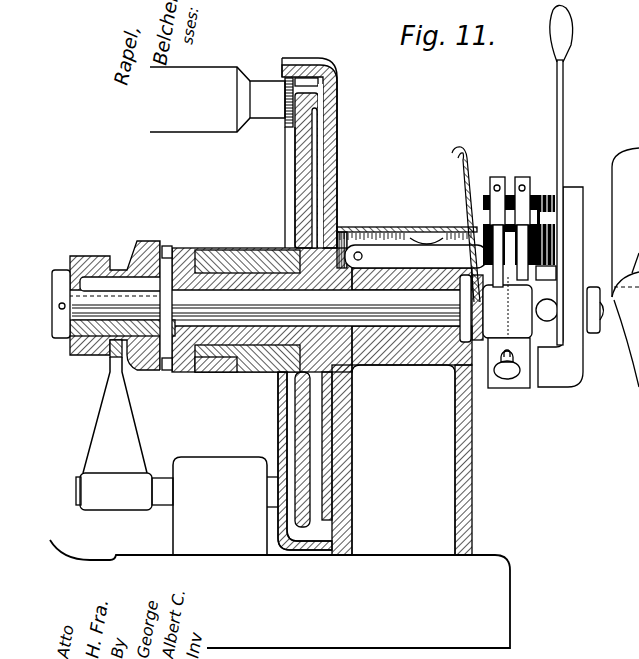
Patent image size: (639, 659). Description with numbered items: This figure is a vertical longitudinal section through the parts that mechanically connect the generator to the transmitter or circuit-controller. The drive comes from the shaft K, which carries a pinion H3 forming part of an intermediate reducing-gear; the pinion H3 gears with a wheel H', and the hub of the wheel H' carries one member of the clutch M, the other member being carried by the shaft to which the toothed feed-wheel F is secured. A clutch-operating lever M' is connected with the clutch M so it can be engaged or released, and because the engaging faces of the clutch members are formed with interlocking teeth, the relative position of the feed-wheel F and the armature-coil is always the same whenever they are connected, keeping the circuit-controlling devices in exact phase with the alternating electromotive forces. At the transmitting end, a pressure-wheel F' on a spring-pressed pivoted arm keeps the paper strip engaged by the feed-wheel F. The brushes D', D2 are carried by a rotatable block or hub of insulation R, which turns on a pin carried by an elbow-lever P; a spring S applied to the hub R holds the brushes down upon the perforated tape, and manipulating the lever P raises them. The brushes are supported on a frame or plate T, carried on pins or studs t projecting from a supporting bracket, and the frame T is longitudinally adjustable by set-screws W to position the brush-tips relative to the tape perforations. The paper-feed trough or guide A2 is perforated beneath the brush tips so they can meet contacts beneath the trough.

The shaft K is at (222, 128).
The pinion H3 is at (287, 128).
The wheel H' is at (286, 310).
The clutch M is at (175, 294).
The clutch-operating lever M' is at (124, 425).
The pressure-wheel F' is at (421, 235).
The brush D' is at (494, 218).
The brush D2 is at (521, 177).
The rotatable block or hub of insulation R is at (557, 195).
The frame or plate T is at (577, 178).
The elbow-lever P is at (568, 117).
The spring S is at (555, 218).
The paper-feed trough or guide A2 is at (540, 280).
The set-screws W is at (550, 303).
The feed-wheel F is at (507, 332).
The pins or studs t is at (602, 337).